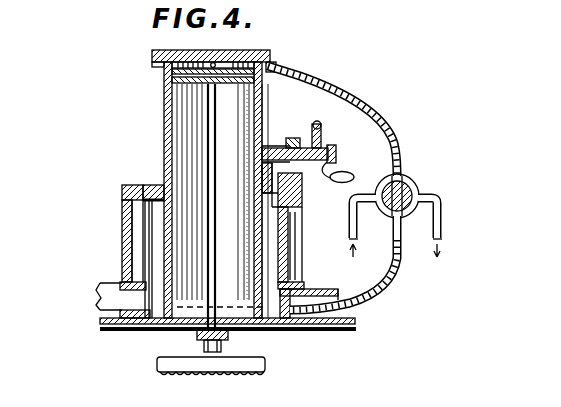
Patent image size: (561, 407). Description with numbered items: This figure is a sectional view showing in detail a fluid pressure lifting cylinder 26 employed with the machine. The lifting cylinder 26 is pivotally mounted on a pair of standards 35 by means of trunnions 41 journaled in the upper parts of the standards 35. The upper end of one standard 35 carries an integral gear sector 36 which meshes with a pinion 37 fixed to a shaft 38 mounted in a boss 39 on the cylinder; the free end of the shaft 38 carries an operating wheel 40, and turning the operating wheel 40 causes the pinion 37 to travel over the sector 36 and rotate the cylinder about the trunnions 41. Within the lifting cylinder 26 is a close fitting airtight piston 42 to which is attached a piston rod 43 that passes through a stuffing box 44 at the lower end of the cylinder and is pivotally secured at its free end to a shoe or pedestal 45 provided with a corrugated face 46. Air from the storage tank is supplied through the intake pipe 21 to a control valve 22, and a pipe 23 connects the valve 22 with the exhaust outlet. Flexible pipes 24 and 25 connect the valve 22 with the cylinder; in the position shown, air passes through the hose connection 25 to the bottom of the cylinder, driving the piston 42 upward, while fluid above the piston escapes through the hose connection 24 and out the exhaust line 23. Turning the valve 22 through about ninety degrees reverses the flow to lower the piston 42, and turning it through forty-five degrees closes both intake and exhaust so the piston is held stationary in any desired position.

The pipe 21 is at (350, 222).
The control valve 22 is at (413, 182).
The pipe 23 is at (437, 205).
The flexible pipe 24 is at (356, 94).
The flexible pipe 25 is at (375, 293).
The lifting cylinder 26 is at (262, 54).
The standard 35 is at (122, 230).
The gear sector 36 is at (308, 178).
The pinion 37 is at (292, 138).
The shaft 38 is at (338, 154).
The boss 39 is at (312, 142).
The operating wheel 40 is at (321, 124).
The trunnion 41 is at (297, 233).
The piston 42 is at (168, 84).
The piston rod 43 is at (214, 226).
The stuffing box 44 is at (230, 336).
The shoe or pedestal 45 is at (157, 363).
The corrugated face 46 is at (186, 375).